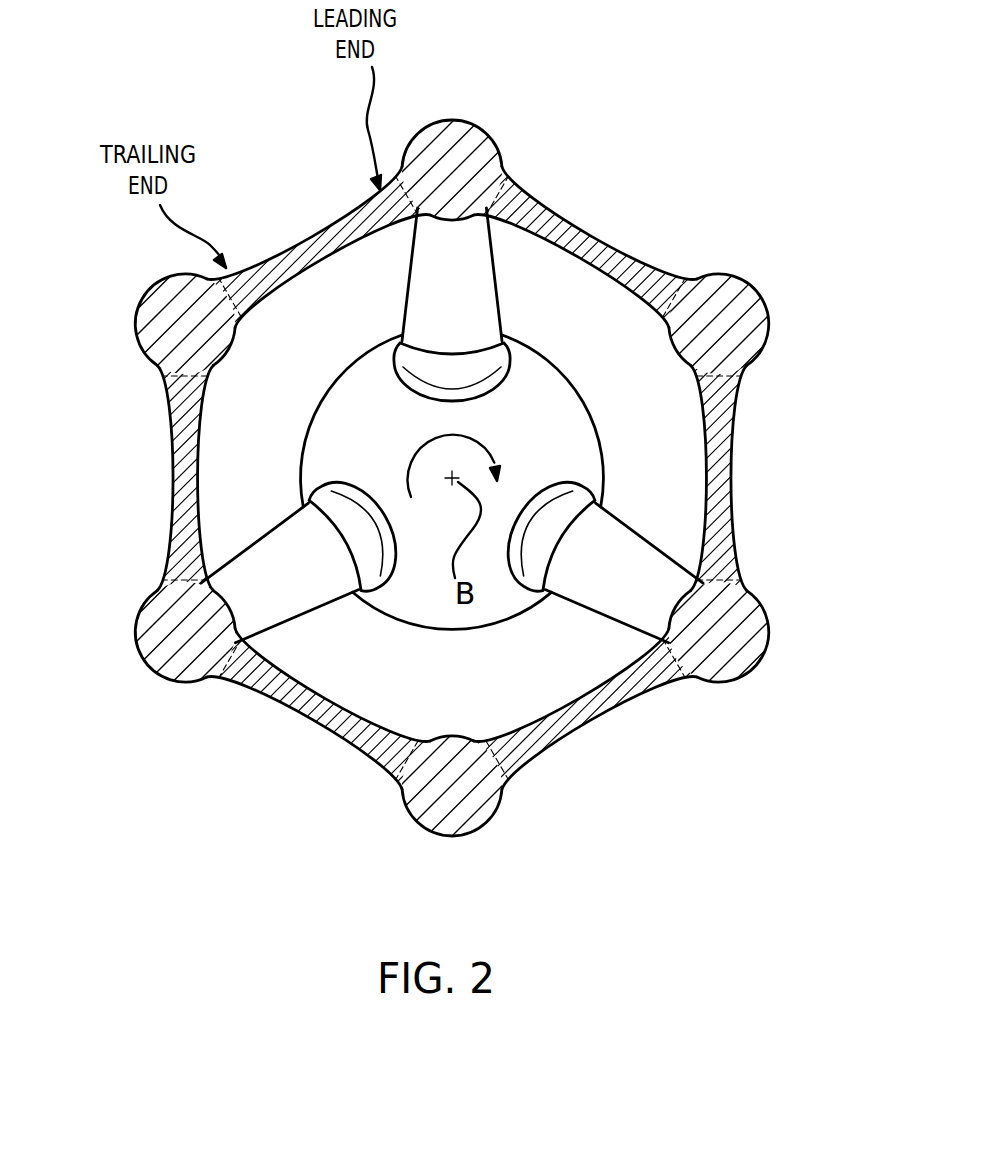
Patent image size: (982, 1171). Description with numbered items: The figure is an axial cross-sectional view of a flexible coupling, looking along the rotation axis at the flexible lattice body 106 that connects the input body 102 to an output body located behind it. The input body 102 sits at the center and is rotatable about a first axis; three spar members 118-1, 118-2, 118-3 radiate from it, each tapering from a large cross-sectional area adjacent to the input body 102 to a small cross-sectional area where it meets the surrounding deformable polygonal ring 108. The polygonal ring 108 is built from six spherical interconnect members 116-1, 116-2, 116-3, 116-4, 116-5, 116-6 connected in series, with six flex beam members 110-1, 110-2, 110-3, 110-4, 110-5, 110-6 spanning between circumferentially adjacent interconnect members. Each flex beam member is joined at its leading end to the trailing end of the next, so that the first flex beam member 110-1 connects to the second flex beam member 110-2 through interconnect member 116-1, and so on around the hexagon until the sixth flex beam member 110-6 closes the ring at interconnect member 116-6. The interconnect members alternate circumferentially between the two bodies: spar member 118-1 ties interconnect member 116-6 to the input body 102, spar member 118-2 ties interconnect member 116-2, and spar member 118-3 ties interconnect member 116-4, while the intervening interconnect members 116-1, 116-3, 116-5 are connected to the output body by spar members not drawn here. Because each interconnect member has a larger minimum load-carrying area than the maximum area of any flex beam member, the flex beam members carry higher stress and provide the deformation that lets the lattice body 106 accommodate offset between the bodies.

The input body 102 is at (542, 388).
The flexible lattice body 106 is at (288, 797).
The deformable polygonal ring 108 is at (93, 553).
The first flex beam member 110-1 is at (547, 223).
The second flex beam member 110-2 is at (720, 460).
The third flex beam member 110-3 is at (597, 700).
The fourth flex beam member 110-4 is at (317, 707).
The fifth flex beam member 110-5 is at (187, 447).
The sixth flex beam member 110-6 is at (340, 218).
The interconnect member 116-1 is at (697, 372).
The interconnect member 116-2 is at (692, 632).
The interconnect member 116-3 is at (452, 778).
The interconnect member 116-4 is at (180, 638).
The interconnect member 116-5 is at (200, 338).
The interconnect member 116-6 is at (424, 203).
The spar member 118-1 is at (420, 316).
The spar member 118-2 is at (622, 541).
The spar member 118-3 is at (317, 577).